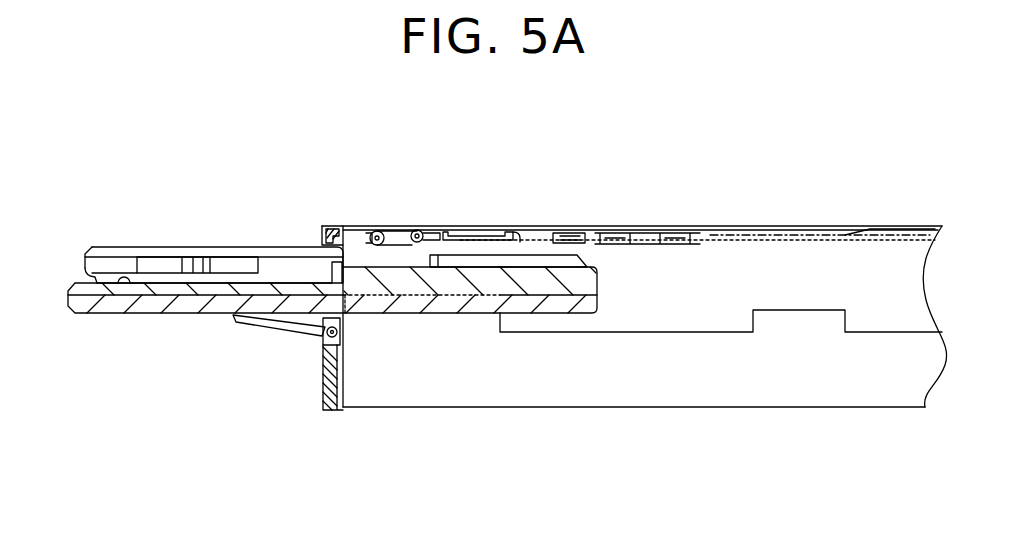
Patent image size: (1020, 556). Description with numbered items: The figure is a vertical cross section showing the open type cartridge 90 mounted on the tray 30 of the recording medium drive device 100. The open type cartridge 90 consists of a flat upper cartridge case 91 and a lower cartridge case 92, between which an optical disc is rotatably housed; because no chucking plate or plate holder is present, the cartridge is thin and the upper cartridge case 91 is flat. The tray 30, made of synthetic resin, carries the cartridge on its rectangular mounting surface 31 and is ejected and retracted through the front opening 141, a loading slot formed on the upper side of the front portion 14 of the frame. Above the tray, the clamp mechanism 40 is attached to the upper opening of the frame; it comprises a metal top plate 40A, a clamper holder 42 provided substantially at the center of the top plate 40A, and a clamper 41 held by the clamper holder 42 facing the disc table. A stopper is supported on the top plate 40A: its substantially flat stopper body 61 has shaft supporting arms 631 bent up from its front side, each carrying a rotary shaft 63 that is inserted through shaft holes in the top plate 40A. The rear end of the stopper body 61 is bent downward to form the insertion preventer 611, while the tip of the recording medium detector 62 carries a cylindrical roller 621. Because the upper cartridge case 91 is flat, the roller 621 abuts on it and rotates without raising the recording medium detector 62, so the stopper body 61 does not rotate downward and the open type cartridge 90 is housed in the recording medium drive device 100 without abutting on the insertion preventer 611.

The recording medium drive device 100 is at (660, 418).
The clamp mechanism 40 is at (707, 176).
The top plate 40A is at (553, 230).
The clamper 41 is at (645, 230).
The clamper holder 42 is at (757, 231).
The front portion 14 is at (323, 372).
The front opening 141 is at (305, 324).
The tray 30 is at (176, 318).
The mounting surface 31 is at (124, 284).
The open type cartridge 90 is at (120, 214).
The upper cartridge case 91 is at (193, 247).
The lower cartridge case 92 is at (95, 276).
The stopper body 61 is at (483, 229).
The insertion preventer 611 is at (519, 232).
The recording medium detector 62 is at (396, 238).
The roller 621 is at (372, 233).
The rotary shaft 63 is at (408, 233).
The shaft supporting arm 631 is at (428, 262).